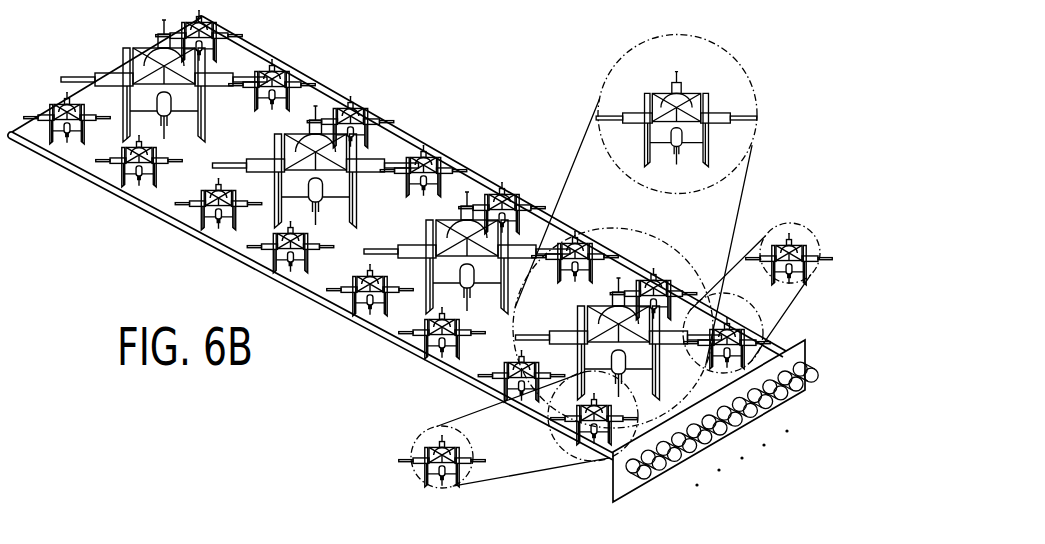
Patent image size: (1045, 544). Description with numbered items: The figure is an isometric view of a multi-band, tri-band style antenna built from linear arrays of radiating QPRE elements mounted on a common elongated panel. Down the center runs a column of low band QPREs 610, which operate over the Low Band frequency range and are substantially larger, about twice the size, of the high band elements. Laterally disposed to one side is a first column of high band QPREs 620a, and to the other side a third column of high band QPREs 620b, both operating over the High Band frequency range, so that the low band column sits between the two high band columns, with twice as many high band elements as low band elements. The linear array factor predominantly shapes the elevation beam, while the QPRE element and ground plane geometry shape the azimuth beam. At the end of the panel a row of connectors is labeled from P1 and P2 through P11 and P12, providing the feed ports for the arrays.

The first QPRE array of elements 610 is at (751, 84).
The second QPRE array of elements 620a is at (417, 437).
The third QPRE array of elements 620b is at (809, 230).
The port 1 P1 is at (636, 484).
The port 2 P2 is at (658, 476).
The port 11 P11 is at (796, 396).
The port 12 P12 is at (816, 380).